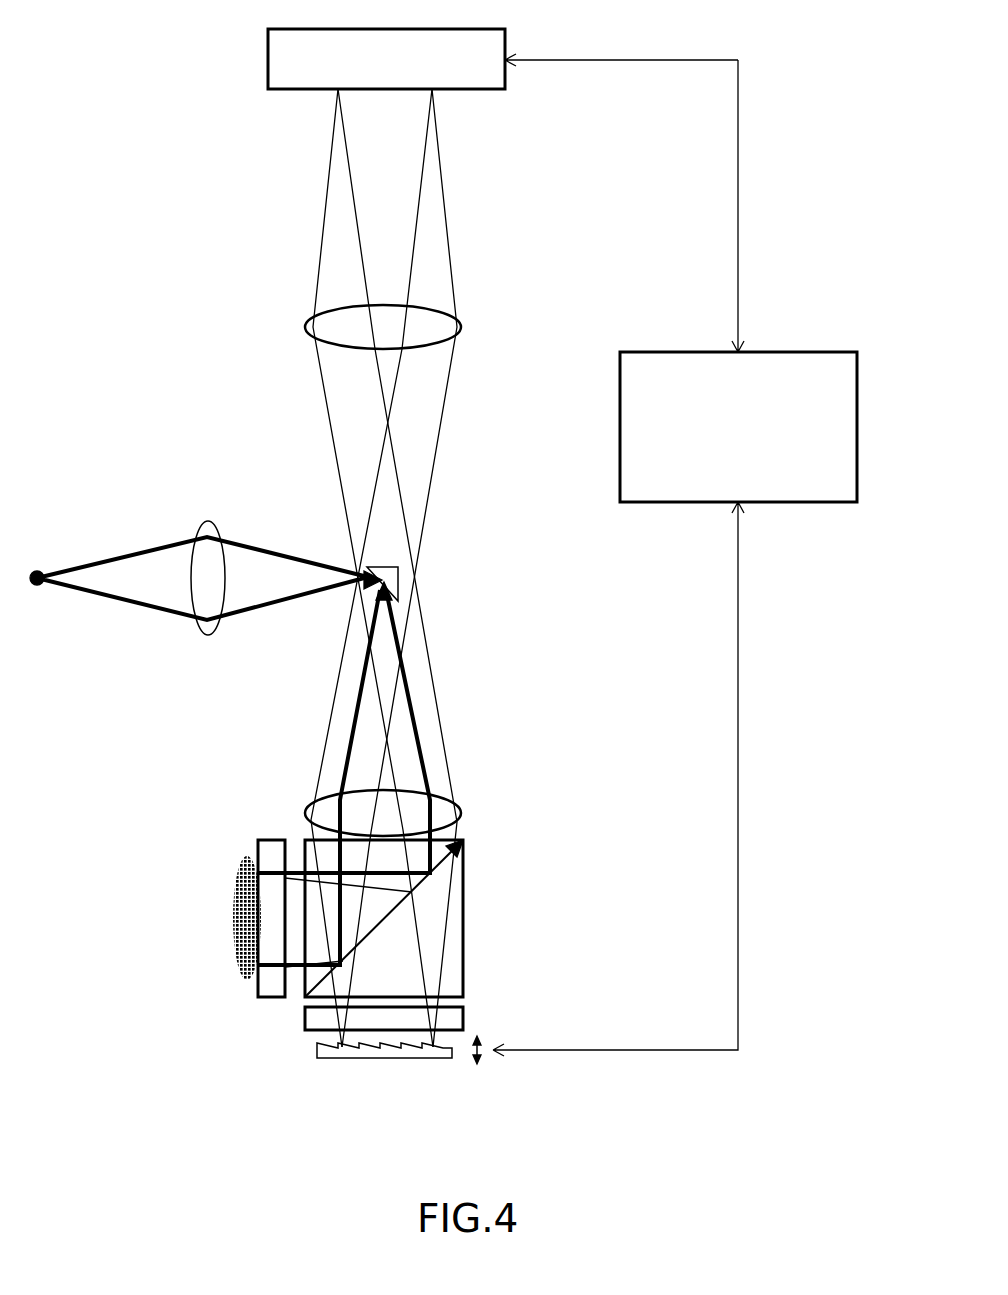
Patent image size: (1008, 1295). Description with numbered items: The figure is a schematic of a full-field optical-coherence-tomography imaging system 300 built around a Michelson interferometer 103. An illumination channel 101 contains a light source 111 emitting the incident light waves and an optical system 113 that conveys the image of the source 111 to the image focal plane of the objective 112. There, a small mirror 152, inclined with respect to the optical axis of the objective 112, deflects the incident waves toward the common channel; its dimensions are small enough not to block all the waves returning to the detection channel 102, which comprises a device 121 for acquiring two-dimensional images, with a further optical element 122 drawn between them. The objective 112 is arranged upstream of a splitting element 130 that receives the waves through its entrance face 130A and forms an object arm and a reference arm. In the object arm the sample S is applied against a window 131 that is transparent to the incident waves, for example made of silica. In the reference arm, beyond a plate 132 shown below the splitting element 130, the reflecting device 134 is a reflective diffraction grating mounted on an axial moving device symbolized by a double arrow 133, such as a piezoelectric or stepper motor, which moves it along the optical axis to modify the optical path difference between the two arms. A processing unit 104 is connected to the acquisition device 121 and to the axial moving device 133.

The measurement apparatus 300 is at (113, 137).
The illumination channel 101 is at (206, 599).
The detection channel 102 is at (370, 533).
The interferometer 103 is at (363, 951).
The processing unit 104 is at (842, 350).
The light source 111 is at (37, 572).
The objective 112 is at (447, 810).
The optical system 113 is at (207, 522).
The device for acquiring two-dimensional images 121 is at (507, 50).
The imaging lens 122 is at (463, 325).
The splitting element 130 is at (419, 913).
The entrance face 130A is at (463, 830).
The window 131 is at (260, 840).
The transparent plate 132 is at (463, 1017).
The axial moving device 133 is at (483, 1053).
The reflecting device 134 is at (405, 1058).
The mirror 152 is at (400, 568).
The sample S is at (232, 925).